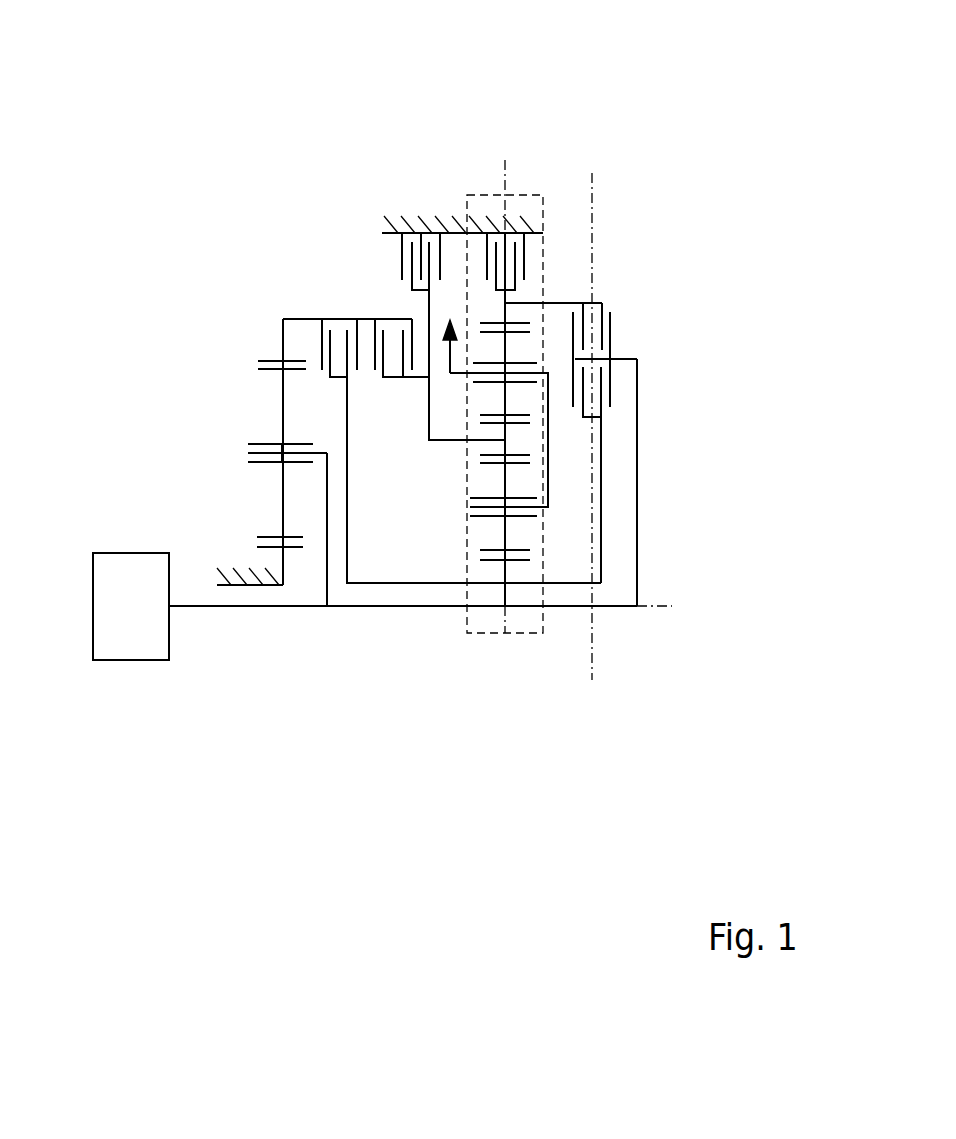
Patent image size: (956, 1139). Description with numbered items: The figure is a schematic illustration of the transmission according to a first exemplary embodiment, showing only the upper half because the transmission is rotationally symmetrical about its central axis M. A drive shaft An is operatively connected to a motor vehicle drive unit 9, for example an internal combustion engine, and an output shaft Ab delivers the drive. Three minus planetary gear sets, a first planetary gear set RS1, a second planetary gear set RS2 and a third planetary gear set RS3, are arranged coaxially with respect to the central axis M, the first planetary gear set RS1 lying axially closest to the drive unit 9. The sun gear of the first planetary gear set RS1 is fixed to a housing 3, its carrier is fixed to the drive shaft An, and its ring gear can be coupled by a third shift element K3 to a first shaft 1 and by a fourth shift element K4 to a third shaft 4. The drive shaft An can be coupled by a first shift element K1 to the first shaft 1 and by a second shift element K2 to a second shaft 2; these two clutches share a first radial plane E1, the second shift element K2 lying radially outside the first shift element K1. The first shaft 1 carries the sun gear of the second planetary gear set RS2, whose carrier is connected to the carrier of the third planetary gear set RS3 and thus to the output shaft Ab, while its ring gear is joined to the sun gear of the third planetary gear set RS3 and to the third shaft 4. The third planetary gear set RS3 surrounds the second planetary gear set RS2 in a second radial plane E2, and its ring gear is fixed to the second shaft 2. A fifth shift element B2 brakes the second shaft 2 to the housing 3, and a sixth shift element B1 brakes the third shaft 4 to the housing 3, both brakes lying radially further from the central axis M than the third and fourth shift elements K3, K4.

The first shaft 1 is at (368, 588).
The second shaft 2 is at (553, 302).
The housing 3 is at (240, 574).
The third shaft 4 is at (448, 440).
The motor vehicle drive unit 9 is at (127, 572).
The first shift element K1 is at (612, 385).
The second shift element K2 is at (613, 335).
The third shift element K3 is at (330, 317).
The fourth shift element K4 is at (387, 317).
The sixth shift element B1 is at (397, 254).
The fifth shift element B2 is at (527, 258).
The first planetary gear set RS1 is at (280, 618).
The second planetary gear set RS2 is at (504, 697).
The third planetary gear set RS3 is at (505, 158).
The first radial plane E1 is at (609, 426).
The second radial plane E2 is at (520, 670).
The drive shaft An is at (257, 479).
The output shaft Ab is at (494, 397).
The central axis M is at (667, 591).